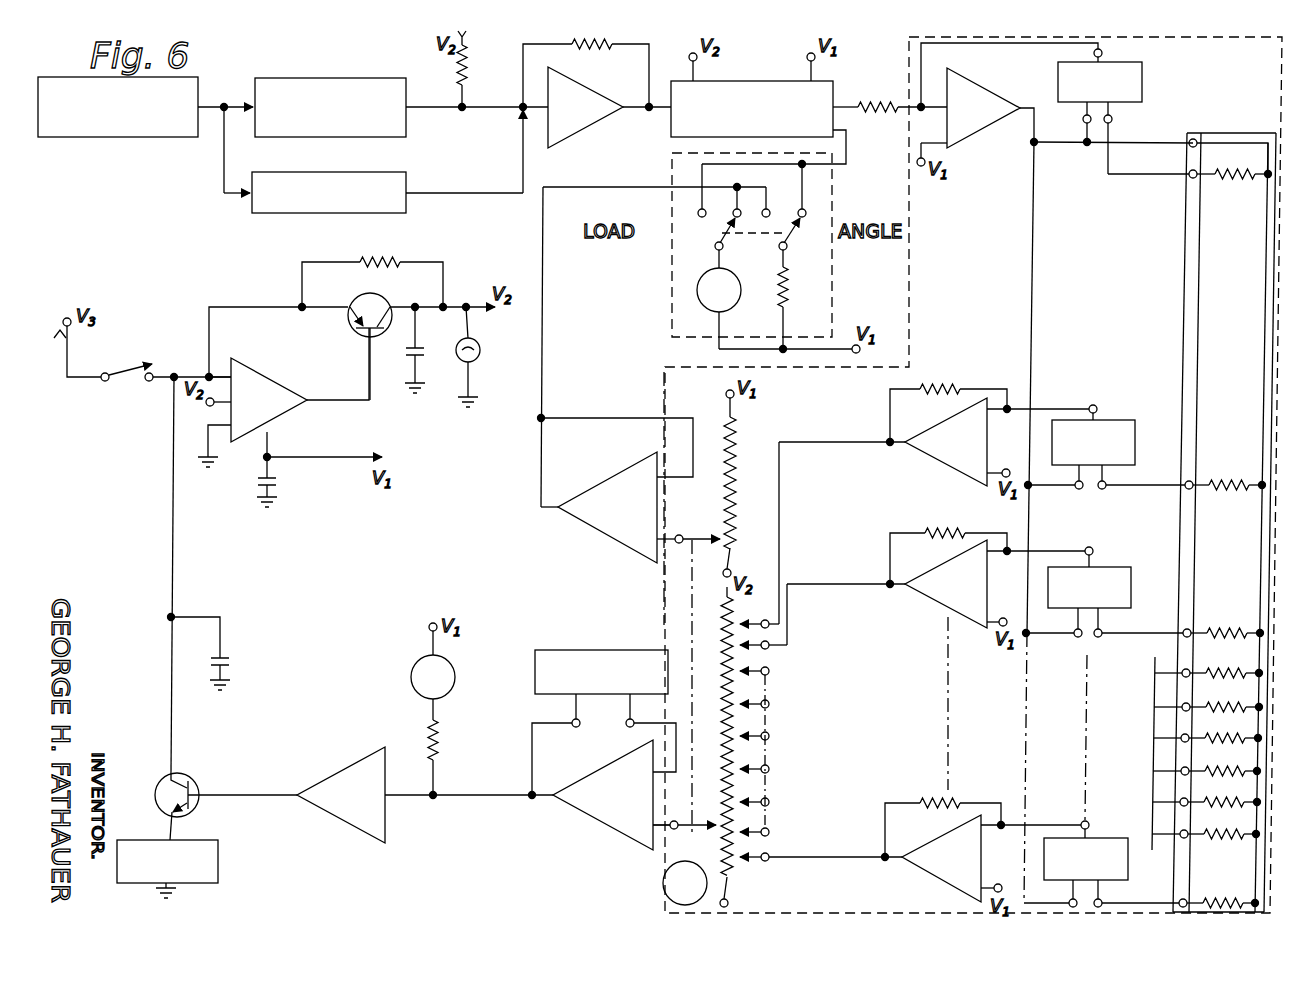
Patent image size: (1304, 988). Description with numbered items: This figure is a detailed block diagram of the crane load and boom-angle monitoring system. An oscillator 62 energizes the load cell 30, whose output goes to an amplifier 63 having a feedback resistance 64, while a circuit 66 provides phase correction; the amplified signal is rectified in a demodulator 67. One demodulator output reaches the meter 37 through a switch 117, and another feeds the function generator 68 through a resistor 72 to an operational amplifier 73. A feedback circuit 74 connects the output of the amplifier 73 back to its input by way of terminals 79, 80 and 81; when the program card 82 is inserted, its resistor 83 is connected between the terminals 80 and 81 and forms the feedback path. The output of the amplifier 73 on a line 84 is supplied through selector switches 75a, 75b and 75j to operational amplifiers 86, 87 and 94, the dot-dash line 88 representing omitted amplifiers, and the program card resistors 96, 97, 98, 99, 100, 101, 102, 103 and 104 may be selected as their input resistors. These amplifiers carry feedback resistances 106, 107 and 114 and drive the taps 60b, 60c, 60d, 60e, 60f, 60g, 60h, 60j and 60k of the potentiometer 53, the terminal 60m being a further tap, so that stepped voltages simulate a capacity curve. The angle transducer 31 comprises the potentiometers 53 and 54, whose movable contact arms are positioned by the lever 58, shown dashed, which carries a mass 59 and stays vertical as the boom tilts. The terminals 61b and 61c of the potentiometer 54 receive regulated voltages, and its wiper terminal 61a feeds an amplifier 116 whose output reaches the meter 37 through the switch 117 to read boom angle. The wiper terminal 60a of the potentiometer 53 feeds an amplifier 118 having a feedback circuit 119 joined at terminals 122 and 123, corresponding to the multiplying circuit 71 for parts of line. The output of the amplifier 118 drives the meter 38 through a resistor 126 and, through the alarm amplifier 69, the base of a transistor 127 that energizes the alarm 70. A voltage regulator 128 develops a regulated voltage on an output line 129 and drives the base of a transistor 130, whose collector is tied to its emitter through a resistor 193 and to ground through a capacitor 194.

The load cell 30 is at (334, 78).
The angle transducer 31 is at (754, 428).
The readout meter 37 is at (700, 302).
The meter 38 is at (411, 679).
The potentiometer 53 is at (728, 691).
The potentiometer 54 is at (736, 464).
The lever 58 is at (692, 610).
The mass 59 is at (663, 888).
The terminal 60a is at (672, 832).
The terminal 60b is at (765, 620).
The terminal 60c is at (770, 648).
The terminal 60d is at (770, 673).
The terminal 60e is at (770, 706).
The terminal 60f is at (770, 738).
The terminal 60g is at (770, 771).
The terminal 60h is at (769, 802).
The terminal 60j is at (769, 832).
The terminal 60k is at (768, 861).
The terminal 60m is at (729, 903).
The terminal 61a is at (680, 533).
The terminal 61b is at (726, 396).
The terminal 61c is at (732, 566).
The oscillator 62 is at (108, 138).
The amplifier 63 is at (582, 133).
The feedback resistance 64 is at (583, 48).
The phase correction circuit 66 is at (330, 169).
The demodulator 67 is at (744, 80).
The function generator 68 is at (906, 72).
The alarm amplifier 69 is at (349, 774).
The alarm 70 is at (218, 862).
The multiplication circuit 71 is at (542, 712).
The resistor 72 is at (862, 118).
The operational amplifier 73 is at (974, 86).
The feedback circuit 74 is at (1142, 96).
The selector switch 75a is at (1122, 418).
The selector switch 75b is at (1131, 598).
The selector switch 75j is at (1113, 838).
The terminal 79 is at (1102, 52).
The terminal 80 is at (1083, 120).
The terminal 81 is at (1112, 119).
The program card 82 is at (1229, 130).
The resistor 83 is at (1176, 182).
The line 84 is at (1032, 290).
The operational amplifier 86 is at (930, 465).
The operational amplifier 87 is at (930, 606).
The operational amplifier 88 is at (945, 672).
The operational amplifier 94 is at (933, 873).
The resistor 96 is at (1230, 480).
The resistor 97 is at (1218, 628).
The resistor 98 is at (1232, 664).
The resistor 99 is at (1230, 698).
The resistor 100 is at (1236, 730).
The resistor 101 is at (1232, 762).
The resistor 102 is at (1230, 794).
The resistor 103 is at (1234, 826).
The resistor 104 is at (1213, 898).
The feedback resistance 106 is at (968, 372).
The feedback resistance 107 is at (952, 528).
The feedback resistance 114 is at (926, 800).
The amplifier 116 is at (614, 482).
The switch 117 is at (722, 233).
The amplifier 118 is at (573, 821).
The feedback circuit 119 is at (562, 650).
The terminal 122 is at (628, 727).
The terminal 123 is at (576, 727).
The resistor 126 is at (440, 742).
The transistor 127 is at (190, 784).
The voltage regulator 128 is at (271, 393).
The output line 129 is at (333, 455).
The transistor 130 is at (383, 304).
The resistor 193 is at (398, 262).
The capacitor 194 is at (428, 362).